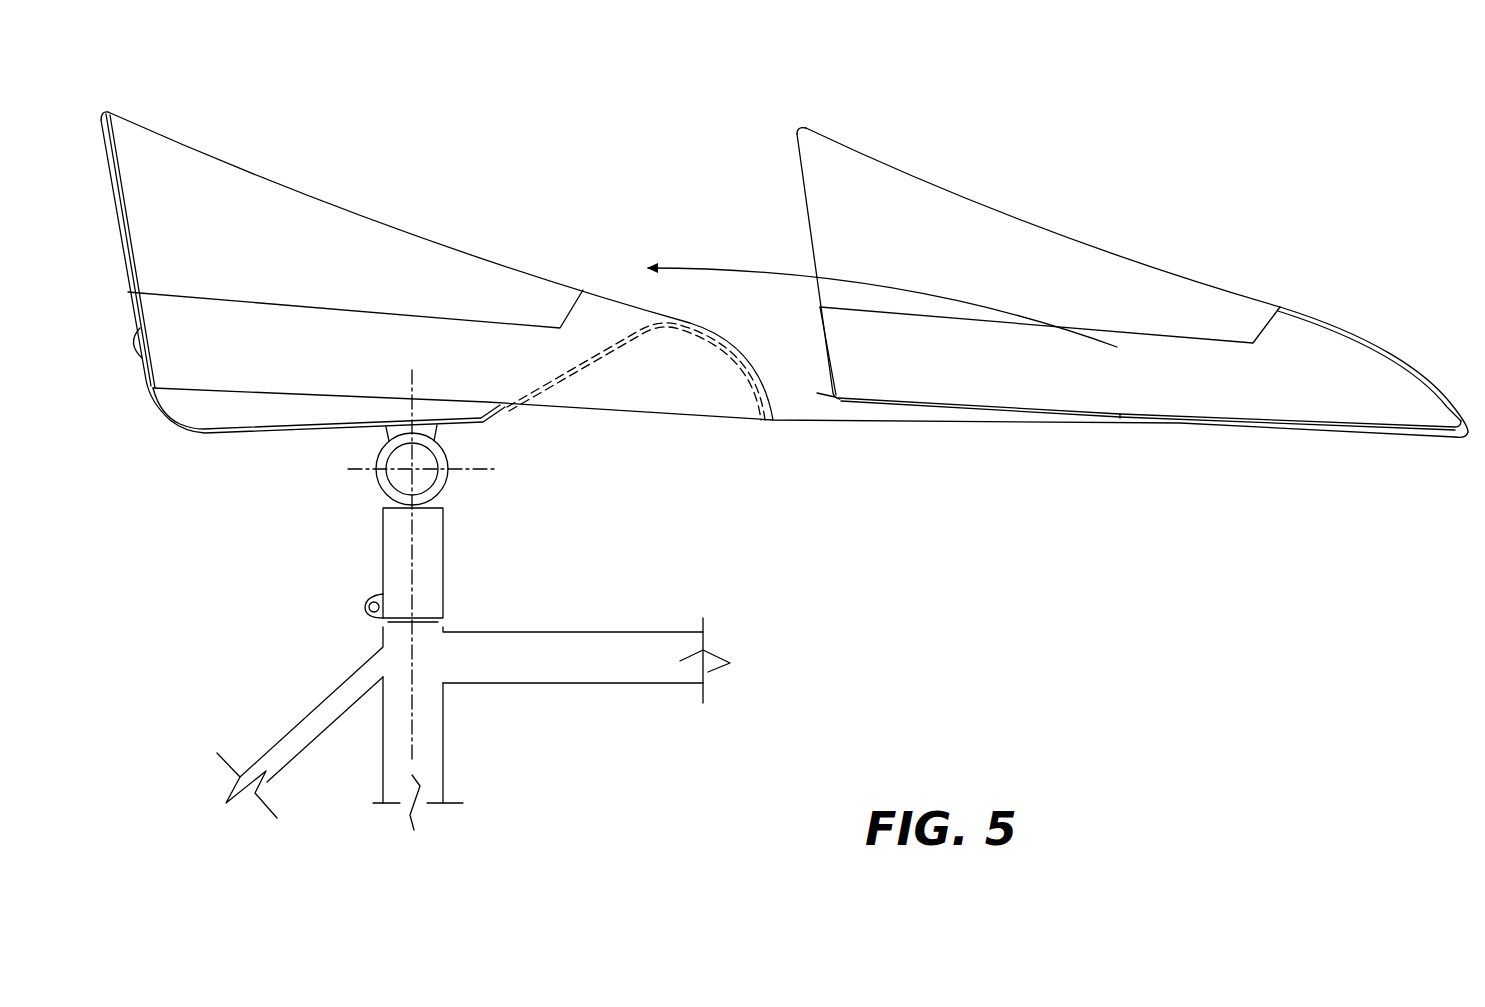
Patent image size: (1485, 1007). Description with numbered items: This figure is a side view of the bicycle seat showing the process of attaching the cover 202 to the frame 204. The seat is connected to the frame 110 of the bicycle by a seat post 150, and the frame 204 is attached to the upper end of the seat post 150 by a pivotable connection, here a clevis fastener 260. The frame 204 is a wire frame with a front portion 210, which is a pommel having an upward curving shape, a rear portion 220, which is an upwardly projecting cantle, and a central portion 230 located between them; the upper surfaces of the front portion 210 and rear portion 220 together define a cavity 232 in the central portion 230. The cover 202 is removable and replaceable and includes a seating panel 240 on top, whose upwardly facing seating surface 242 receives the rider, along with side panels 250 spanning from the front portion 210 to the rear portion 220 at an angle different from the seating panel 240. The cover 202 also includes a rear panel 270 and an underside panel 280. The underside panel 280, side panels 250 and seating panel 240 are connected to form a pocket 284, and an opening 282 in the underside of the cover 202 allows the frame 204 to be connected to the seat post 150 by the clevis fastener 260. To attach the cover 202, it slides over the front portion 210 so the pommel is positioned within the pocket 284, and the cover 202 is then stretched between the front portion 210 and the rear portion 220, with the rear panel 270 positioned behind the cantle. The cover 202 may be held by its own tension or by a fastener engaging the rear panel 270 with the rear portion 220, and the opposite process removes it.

The frame 110 is at (635, 663).
The seat post 150 is at (418, 567).
The cover 202 is at (1416, 352).
The frame 204 is at (497, 420).
The front portion 210 is at (667, 247).
The rear portion 220 is at (146, 124).
The central portion 230 is at (318, 460).
The cavity 232 is at (365, 340).
The seating panel 240 is at (990, 212).
The seating surface 242 is at (1106, 248).
The side panel 250 is at (1337, 400).
The clevis fastener 260 is at (433, 488).
The rear panel 270 is at (800, 185).
The underside panel 280 is at (1273, 432).
The opening 282 is at (1017, 378).
The pocket 284 is at (1215, 373).